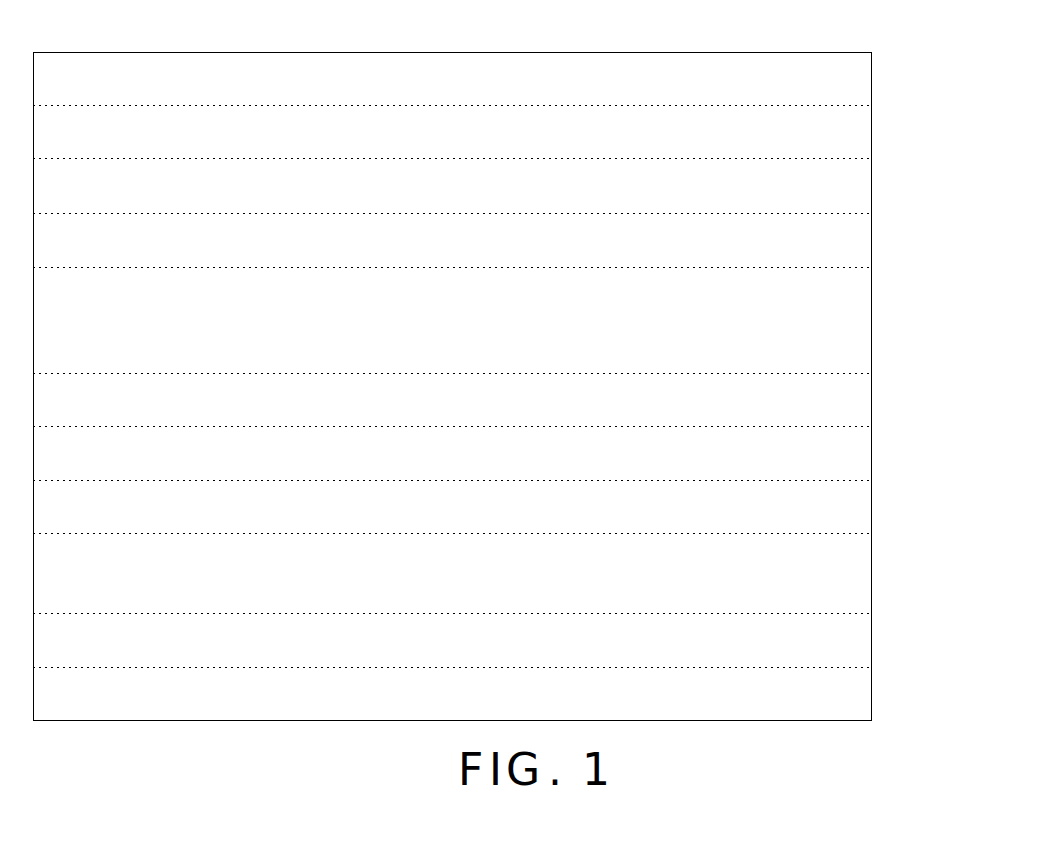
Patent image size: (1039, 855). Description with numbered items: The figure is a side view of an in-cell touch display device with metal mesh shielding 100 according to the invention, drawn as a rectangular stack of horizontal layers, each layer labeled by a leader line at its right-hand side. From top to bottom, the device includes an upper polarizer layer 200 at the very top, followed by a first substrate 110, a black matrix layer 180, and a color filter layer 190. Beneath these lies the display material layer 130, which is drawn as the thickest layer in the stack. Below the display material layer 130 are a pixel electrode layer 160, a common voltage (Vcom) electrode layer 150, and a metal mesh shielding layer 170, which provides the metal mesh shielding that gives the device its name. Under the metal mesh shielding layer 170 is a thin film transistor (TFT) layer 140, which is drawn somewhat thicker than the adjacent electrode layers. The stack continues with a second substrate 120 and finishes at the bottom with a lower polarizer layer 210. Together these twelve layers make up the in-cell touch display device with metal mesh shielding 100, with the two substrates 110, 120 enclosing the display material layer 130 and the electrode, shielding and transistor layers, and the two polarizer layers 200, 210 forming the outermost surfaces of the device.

The in-cell touch display device with metal mesh shielding 100 is at (1035, 60).
The upper polarizer layer 200 is at (872, 78).
The first substrate 110 is at (872, 131).
The black matrix layer 180 is at (872, 185).
The color filter layer 190 is at (872, 239).
The display material layer 130 is at (872, 318).
The pixel electrode layer 160 is at (872, 398).
The common voltage (Vcom) electrode layer 150 is at (872, 452).
The metal mesh shielding layer 170 is at (872, 506).
The thin film transistor (TFT) layer 140 is at (872, 572).
The second substrate 120 is at (872, 640).
The lower polarizer layer 210 is at (872, 694).